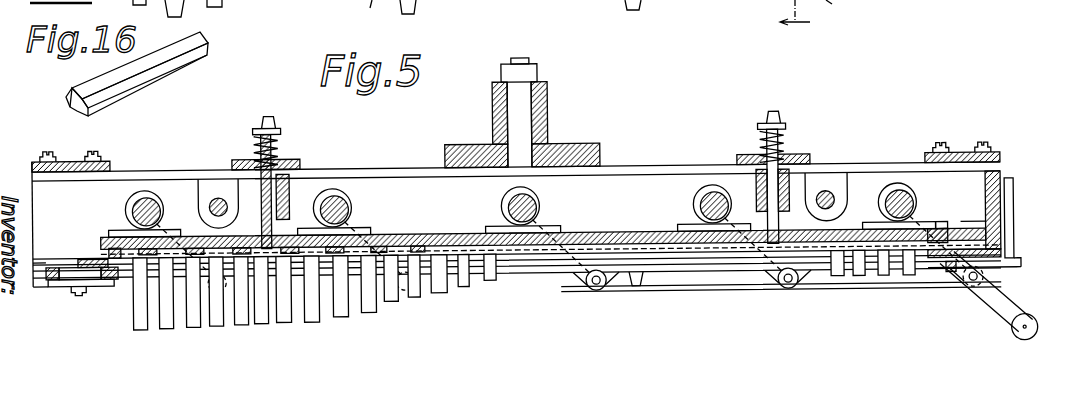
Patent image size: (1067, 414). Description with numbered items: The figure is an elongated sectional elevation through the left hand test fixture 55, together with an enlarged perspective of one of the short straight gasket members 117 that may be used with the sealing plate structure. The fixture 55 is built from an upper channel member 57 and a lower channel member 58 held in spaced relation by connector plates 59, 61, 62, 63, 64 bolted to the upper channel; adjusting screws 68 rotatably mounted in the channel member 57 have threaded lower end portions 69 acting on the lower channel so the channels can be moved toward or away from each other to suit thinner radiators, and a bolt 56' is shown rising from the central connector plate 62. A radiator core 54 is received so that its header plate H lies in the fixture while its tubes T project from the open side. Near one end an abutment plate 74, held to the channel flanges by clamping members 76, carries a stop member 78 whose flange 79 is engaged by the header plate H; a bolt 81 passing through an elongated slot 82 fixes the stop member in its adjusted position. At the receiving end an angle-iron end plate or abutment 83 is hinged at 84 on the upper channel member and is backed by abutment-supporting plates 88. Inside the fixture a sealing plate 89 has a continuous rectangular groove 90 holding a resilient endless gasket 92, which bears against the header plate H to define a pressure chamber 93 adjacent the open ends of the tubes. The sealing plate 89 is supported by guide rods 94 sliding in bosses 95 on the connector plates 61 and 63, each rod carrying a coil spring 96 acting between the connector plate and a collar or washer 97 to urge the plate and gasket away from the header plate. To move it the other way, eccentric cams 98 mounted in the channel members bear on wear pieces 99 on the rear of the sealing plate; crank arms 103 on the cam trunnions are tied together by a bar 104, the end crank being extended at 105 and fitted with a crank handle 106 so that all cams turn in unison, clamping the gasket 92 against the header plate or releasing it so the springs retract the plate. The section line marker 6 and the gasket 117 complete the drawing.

In FIG. 16, the gasket member 117 is at (150, 62).
In FIG. 5, the threaded lower end portion 69 is at (222, 5).
In FIG. 5, the lower channel member 58 is at (367, 13).
In FIG. 5, the section line 6 is at (795, 22).
In FIG. 5, the test fixture 55 is at (880, 160).
In FIG. 5, the upper channel member 57 is at (184, 161).
In FIG. 5, the connector plate 59 is at (107, 158).
In FIG. 5, the connector plate 61 is at (300, 160).
In FIG. 5, the connector plate 62 is at (447, 157).
In FIG. 5, the connector plate 63 is at (806, 162).
In FIG. 5, the connector plate 64 is at (926, 155).
In FIG. 5, the center bolt 56' is at (498, 113).
In FIG. 5, the collar or washer 97 is at (281, 127).
In FIG. 5, the supporting guide rod 94 is at (270, 226).
In FIG. 5, the coil spring 96 is at (257, 137).
In FIG. 5, the boss 95 is at (285, 211).
In FIG. 5, the adjusting screw 68 is at (211, 201).
In FIG. 5, the eccentric cam 98 is at (128, 204).
In FIG. 5, the wear piece 99 is at (368, 231).
In FIG. 5, the sealing plate 89 is at (439, 229).
In FIG. 5, the pressure chamber 93 is at (620, 246).
In FIG. 5, the endless gasket 92 is at (108, 240).
In FIG. 5, the rectangular groove 90 is at (943, 231).
In FIG. 5, the header plate H is at (972, 208).
In FIG. 5, the end plate or abutment 83 is at (1000, 185).
In FIG. 5, the hinge mounting 84 is at (1013, 217).
In FIG. 5, the abutment-supporting plate 88 is at (1002, 272).
In FIG. 5, the stop member 78 is at (70, 262).
In FIG. 5, the flange or projecting portion 79 is at (80, 254).
In FIG. 5, the bolt 81 is at (93, 283).
In FIG. 5, the slot 82 is at (75, 289).
In FIG. 5, the clamping member 76 is at (113, 284).
In FIG. 5, the abutment plate 74 is at (52, 250).
In FIG. 5, the tubes T is at (524, 310).
In FIG. 5, the radiator core 54 is at (380, 320).
In FIG. 5, the crank arm 103 is at (576, 291).
In FIG. 5, the bar 104 is at (677, 293).
In FIG. 5, the extended portion 105 is at (985, 306).
In FIG. 5, the crank handle 106 is at (1012, 336).